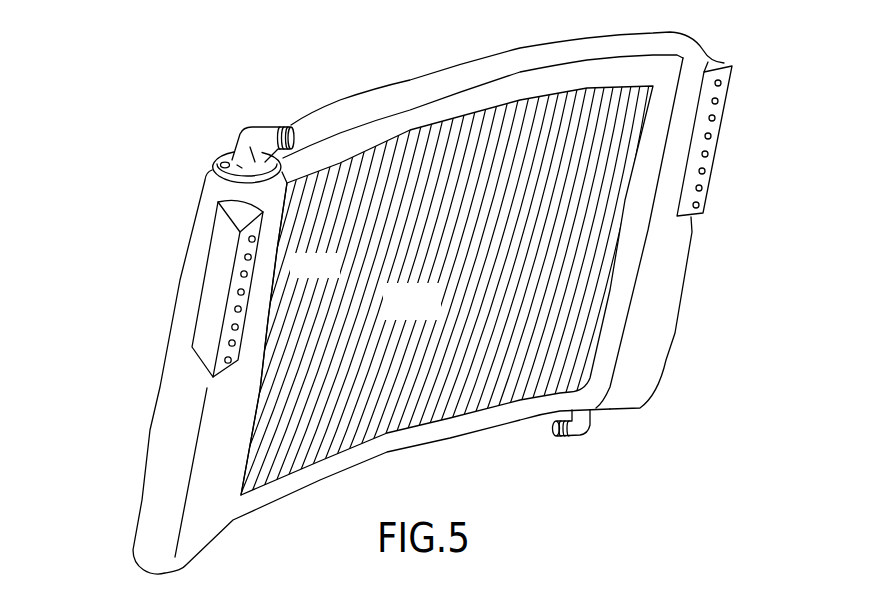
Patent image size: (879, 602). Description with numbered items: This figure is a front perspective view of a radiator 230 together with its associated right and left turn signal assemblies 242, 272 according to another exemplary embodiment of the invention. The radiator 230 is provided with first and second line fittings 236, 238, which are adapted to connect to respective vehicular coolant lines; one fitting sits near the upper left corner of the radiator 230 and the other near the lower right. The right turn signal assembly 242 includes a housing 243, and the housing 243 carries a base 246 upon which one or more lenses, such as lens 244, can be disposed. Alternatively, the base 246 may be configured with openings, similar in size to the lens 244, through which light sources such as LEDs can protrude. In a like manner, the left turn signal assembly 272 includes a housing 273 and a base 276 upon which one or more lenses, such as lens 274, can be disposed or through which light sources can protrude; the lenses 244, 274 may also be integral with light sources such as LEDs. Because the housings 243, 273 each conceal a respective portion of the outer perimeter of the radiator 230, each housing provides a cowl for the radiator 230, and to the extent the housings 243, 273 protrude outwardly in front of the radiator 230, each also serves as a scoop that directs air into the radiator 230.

The radiator 230 is at (431, 315).
The first line fitting 236 is at (257, 138).
The second line fitting 238 is at (582, 423).
The right turn signal assembly 242 is at (327, 363).
The housing 243 is at (242, 430).
The lens 244 is at (251, 257).
The base 246 is at (208, 307).
The left turn signal assembly 272 is at (690, 233).
The housing 273 is at (668, 338).
The lens 274 is at (711, 136).
The base 276 is at (723, 63).